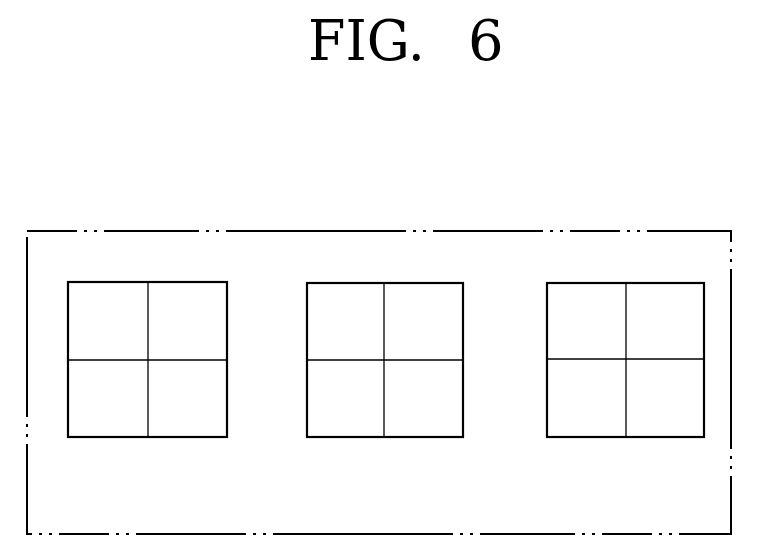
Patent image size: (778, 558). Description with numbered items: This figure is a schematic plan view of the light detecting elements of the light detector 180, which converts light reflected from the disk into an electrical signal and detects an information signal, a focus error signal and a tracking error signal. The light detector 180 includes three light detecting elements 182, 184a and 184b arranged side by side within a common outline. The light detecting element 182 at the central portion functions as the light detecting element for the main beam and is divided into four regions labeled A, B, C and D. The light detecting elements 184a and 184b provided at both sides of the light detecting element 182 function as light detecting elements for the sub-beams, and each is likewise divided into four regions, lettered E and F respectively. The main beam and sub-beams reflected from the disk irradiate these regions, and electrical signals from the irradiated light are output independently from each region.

The light detector 180 is at (410, 196).
The light detecting element 182 is at (358, 437).
The light detecting element 184a is at (122, 437).
The light detecting element 184b is at (598, 437).